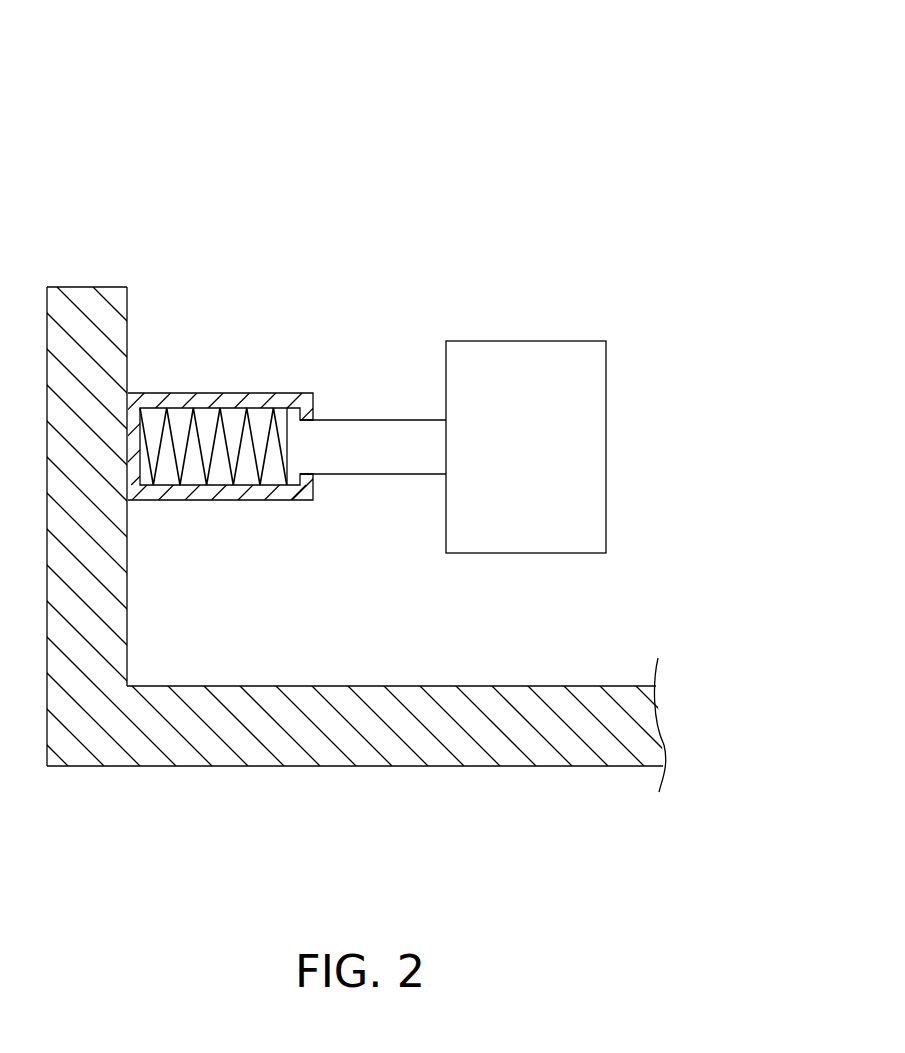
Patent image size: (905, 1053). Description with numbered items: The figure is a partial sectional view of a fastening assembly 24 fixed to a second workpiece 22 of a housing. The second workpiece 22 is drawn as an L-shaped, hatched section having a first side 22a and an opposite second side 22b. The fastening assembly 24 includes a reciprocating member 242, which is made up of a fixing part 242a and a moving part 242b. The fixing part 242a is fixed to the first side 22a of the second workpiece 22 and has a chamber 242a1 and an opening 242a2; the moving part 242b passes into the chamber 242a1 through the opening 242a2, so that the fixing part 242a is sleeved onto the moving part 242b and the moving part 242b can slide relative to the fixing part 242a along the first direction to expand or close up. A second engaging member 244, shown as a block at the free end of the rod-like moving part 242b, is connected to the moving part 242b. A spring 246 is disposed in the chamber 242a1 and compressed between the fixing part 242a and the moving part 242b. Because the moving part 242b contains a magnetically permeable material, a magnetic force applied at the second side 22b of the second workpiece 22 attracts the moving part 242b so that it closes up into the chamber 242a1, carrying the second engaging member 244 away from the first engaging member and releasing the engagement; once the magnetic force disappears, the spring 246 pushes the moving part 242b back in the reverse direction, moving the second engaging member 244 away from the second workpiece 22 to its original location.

The second workpiece 22 is at (394, 574).
The first side 22a is at (127, 603).
The second side 22b is at (47, 602).
The fastening assembly 24 is at (414, 152).
The reciprocating member 242 is at (357, 263).
The fixing part 242a is at (240, 393).
The chamber 242a1 is at (220, 477).
The opening 242a2 is at (308, 478).
The moving part 242b is at (329, 437).
The second engaging member 244 is at (482, 385).
The spring 246 is at (150, 417).